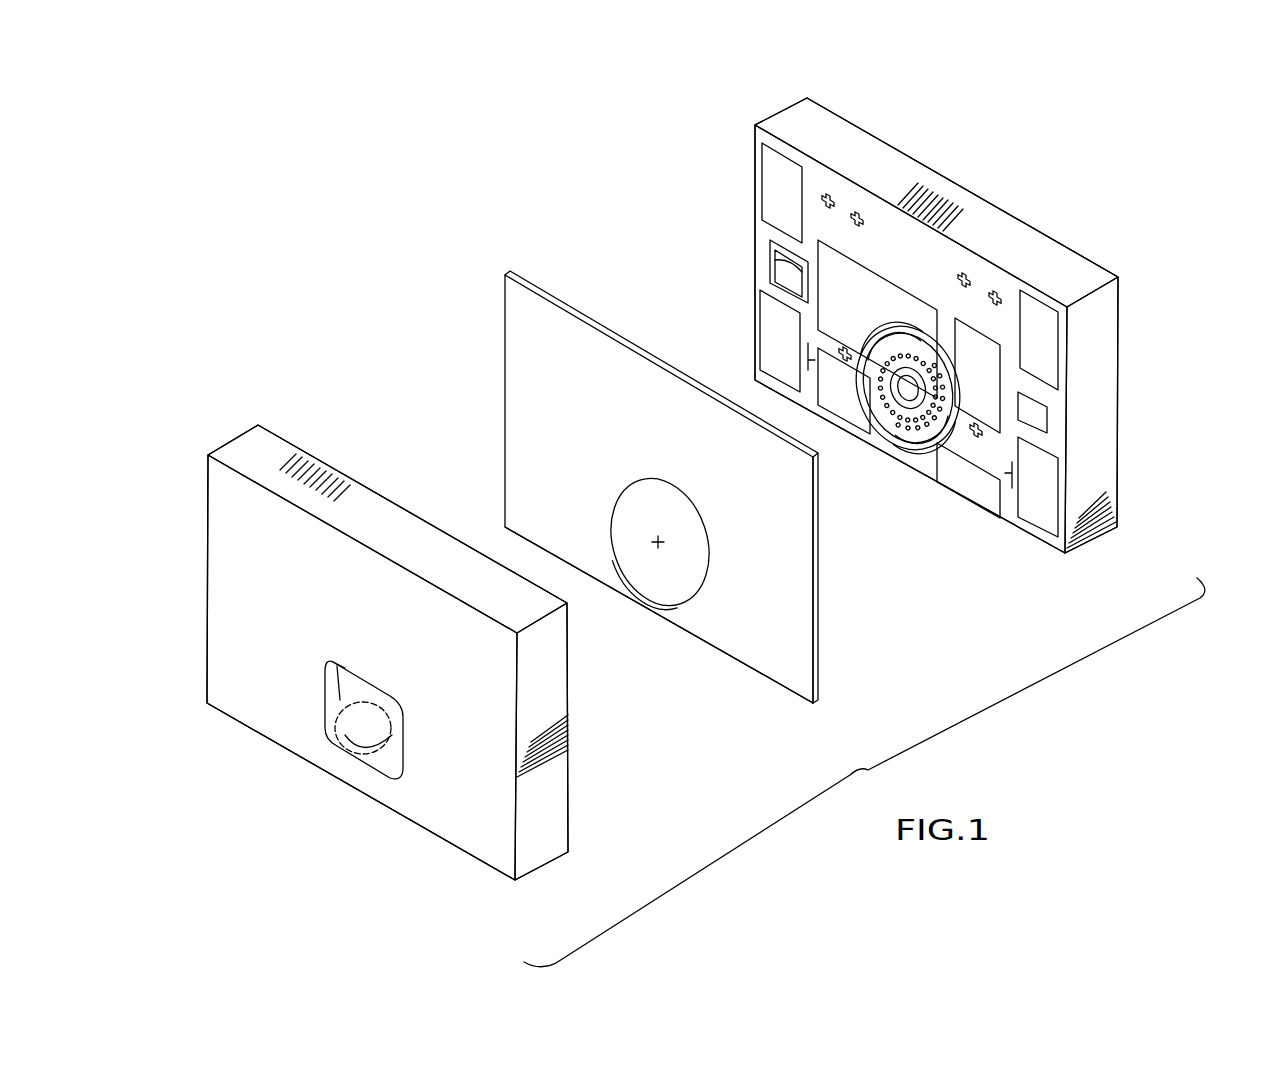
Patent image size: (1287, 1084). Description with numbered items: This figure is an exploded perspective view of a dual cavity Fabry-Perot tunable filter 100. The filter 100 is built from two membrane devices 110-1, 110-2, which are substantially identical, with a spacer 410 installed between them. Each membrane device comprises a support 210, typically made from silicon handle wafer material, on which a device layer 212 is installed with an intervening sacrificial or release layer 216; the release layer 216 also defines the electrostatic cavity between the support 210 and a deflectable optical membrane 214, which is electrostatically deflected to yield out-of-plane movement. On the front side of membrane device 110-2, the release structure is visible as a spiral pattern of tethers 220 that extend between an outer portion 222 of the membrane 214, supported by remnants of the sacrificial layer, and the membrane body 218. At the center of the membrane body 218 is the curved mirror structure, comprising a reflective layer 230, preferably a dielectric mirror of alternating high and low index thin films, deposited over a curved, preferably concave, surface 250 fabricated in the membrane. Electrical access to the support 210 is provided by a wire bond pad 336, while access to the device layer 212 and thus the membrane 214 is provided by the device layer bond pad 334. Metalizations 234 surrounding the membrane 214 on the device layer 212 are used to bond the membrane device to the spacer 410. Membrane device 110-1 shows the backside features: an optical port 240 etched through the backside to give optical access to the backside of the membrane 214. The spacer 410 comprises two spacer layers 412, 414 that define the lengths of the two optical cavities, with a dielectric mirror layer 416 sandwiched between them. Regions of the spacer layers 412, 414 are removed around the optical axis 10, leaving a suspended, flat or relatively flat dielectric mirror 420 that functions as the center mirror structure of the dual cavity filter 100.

The dual cavity Fabry-Perot tunable filter 100 is at (996, 165).
The membrane device 110-1 is at (560, 858).
The membrane device 110-2 is at (1135, 326).
The support 210 is at (1118, 490).
The device layer 212 is at (1010, 510).
The deflectable optical membrane 214 is at (884, 442).
The release layer 216 is at (1067, 461).
The membrane body 218 is at (940, 391).
The tethers 220 is at (893, 338).
The outer portion 222 is at (942, 456).
The reflective layer 230 is at (918, 378).
The metalizations 234 is at (775, 187).
The optical port 240 is at (342, 745).
The curved mirror structure 250 is at (918, 428).
The device layer bond pad 334 is at (1047, 419).
The wire bond pad 336 is at (786, 273).
The spacer 410 is at (831, 686).
The spacer layer 412 is at (754, 649).
The spacer layer 414 is at (820, 621).
The dielectric mirror layer 416 is at (678, 572).
The suspended mirror 420 is at (649, 497).
The optical axis 10 is at (655, 542).